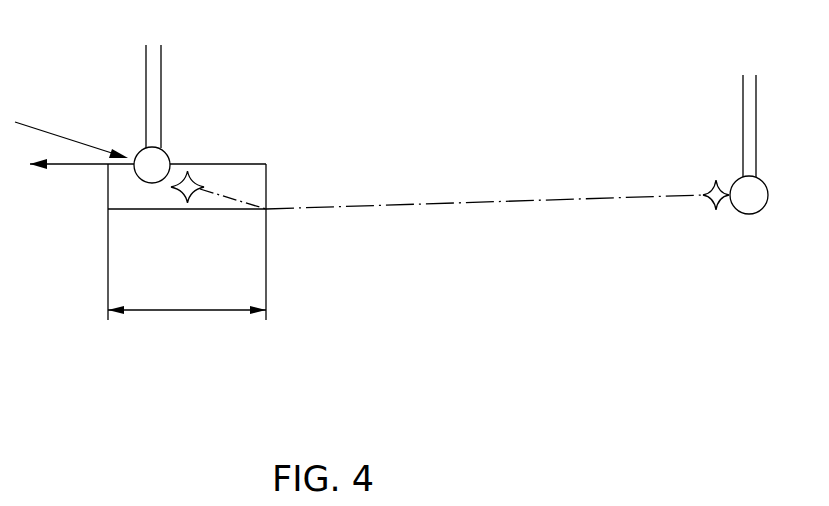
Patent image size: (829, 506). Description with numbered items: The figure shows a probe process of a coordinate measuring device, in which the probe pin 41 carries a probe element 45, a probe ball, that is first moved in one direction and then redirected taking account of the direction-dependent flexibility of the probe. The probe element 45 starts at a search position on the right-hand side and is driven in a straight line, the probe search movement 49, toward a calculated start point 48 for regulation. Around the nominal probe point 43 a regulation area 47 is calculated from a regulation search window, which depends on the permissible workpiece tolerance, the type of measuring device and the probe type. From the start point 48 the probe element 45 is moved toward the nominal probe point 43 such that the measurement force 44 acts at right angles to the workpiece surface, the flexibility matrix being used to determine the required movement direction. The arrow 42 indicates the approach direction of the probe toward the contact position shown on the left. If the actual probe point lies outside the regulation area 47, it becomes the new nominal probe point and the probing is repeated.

The probe pin 41 is at (162, 88).
The inflow 42 is at (50, 130).
The nominal probe point 43 is at (194, 180).
The measurement force 44 is at (62, 165).
The probe element 45 is at (165, 150).
The regulation area 47 is at (182, 312).
The start point for the regulation 48 is at (267, 213).
The probe search movement 49 is at (490, 203).